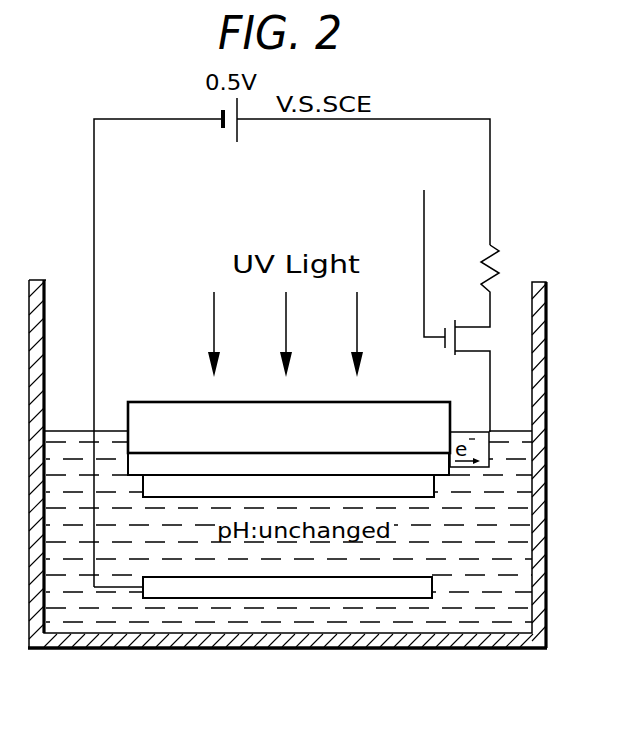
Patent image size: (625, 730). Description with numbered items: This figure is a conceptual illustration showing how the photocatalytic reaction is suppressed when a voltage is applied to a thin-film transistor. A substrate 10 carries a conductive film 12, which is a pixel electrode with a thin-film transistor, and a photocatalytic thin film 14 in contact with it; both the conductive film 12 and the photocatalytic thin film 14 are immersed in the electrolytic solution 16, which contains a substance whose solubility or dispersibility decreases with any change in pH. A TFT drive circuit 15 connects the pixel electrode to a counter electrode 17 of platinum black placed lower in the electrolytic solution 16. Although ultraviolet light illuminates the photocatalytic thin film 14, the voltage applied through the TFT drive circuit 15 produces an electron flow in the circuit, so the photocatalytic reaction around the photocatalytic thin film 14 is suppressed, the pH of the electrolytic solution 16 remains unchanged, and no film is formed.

The substrate 10 is at (431, 400).
The conductive film 12 is at (439, 468).
The photocatalytic thin film 14 is at (427, 490).
The TFT drive circuit 15 is at (490, 190).
The electrolytic solution 16 is at (295, 640).
The counter electrode 17 is at (198, 588).